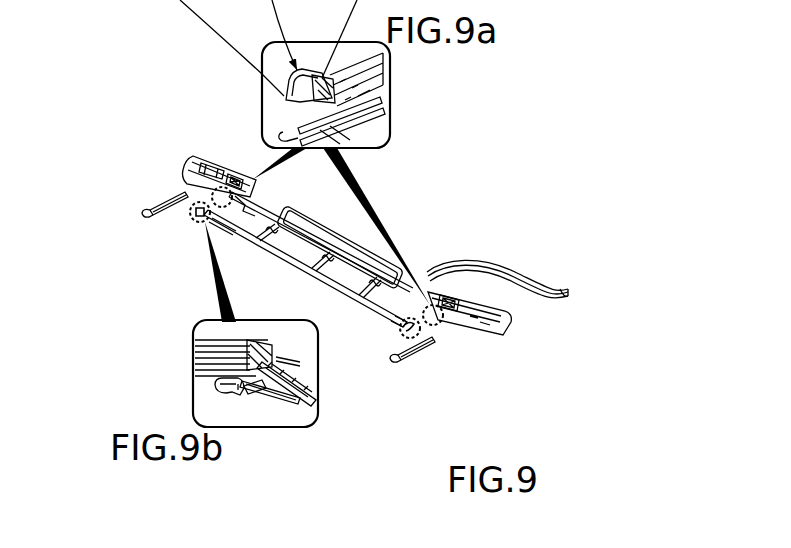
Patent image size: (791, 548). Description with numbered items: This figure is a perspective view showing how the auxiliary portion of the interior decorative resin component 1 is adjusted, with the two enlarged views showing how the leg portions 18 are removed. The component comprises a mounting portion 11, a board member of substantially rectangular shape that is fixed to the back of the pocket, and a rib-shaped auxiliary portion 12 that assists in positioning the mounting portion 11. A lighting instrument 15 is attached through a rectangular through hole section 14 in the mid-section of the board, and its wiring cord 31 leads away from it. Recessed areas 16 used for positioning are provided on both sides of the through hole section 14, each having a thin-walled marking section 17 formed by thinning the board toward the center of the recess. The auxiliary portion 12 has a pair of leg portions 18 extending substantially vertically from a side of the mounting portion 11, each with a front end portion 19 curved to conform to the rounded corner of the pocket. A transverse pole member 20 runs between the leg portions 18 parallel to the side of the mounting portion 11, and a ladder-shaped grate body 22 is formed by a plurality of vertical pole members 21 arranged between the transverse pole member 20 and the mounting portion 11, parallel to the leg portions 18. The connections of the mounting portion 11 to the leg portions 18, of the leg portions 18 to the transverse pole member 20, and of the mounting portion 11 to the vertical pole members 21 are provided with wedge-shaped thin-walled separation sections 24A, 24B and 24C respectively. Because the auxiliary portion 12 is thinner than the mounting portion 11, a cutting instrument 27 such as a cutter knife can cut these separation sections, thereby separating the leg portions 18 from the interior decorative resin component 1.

In FIG. 9, the interior decorative resin component 1 is at (500, 380).
In FIG. 9, the mounting portion 11 is at (458, 282).
In FIG. 9, the auxiliary portion 12 is at (227, 243).
In FIG. 9a, the auxiliary portion 12 is at (291, 122).
In FIG. 9b, the auxiliary portion 12 is at (213, 398).
In FIG. 9, the through hole section 14 is at (352, 228).
In FIG. 9, the lighting instrument 15 is at (352, 243).
In FIG. 9, the recessed area 16 is at (210, 170).
In FIG. 9, the thin-walled marking section 17 is at (190, 166).
In FIG. 9, the leg portion 18 is at (172, 199).
In FIG. 9b, the leg portion 18 is at (244, 394).
In FIG. 9, the front end portion 19 is at (144, 215).
In FIG. 9a, the front end portion 19 is at (283, 136).
In FIG. 9b, the front end portion 19 is at (217, 388).
In FIG. 9, the transverse pole member 20 is at (402, 327).
In FIG. 9a, the transverse pole member 20 is at (346, 125).
In FIG. 9, the vertical pole member 21 is at (320, 258).
In FIG. 9, the ladder-shaped grate body 22 is at (247, 246).
In FIG. 9a, the thin-walled separation section 24A is at (378, 70).
In FIG. 9b, the thin-walled separation section 24B is at (279, 402).
In FIG. 9, the thin-walled separation section 24C is at (318, 208).
In FIG. 9b, the cutting instrument 27 is at (259, 347).
In FIG. 9, the wiring cord 31 is at (548, 288).